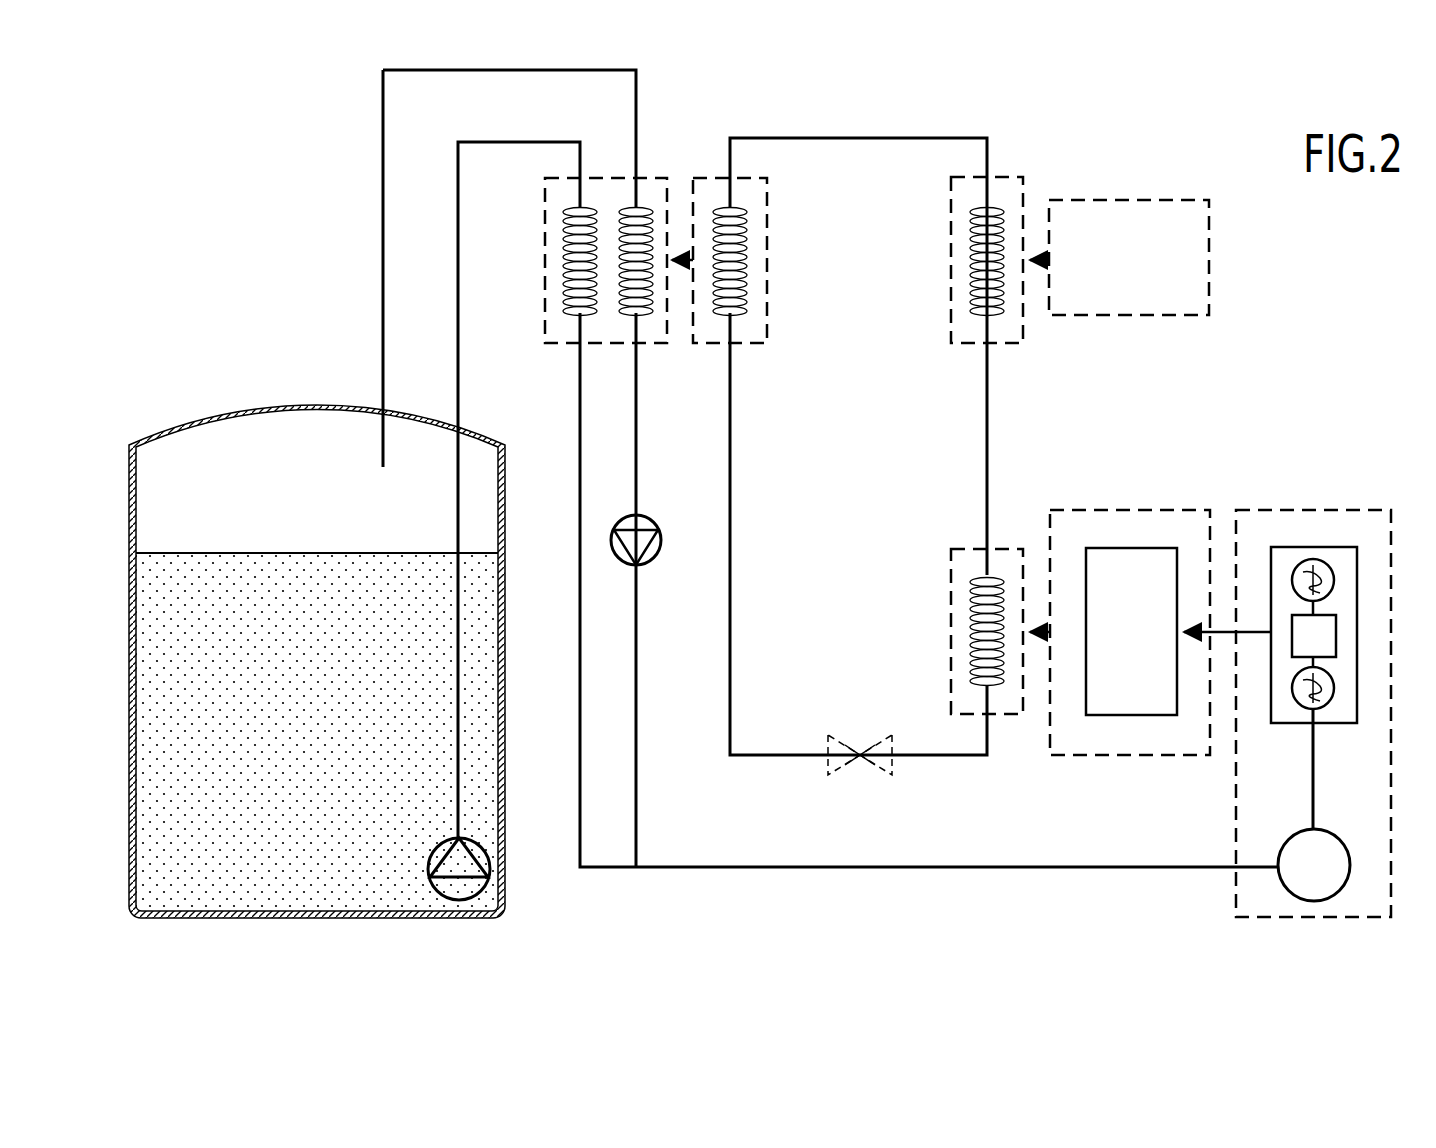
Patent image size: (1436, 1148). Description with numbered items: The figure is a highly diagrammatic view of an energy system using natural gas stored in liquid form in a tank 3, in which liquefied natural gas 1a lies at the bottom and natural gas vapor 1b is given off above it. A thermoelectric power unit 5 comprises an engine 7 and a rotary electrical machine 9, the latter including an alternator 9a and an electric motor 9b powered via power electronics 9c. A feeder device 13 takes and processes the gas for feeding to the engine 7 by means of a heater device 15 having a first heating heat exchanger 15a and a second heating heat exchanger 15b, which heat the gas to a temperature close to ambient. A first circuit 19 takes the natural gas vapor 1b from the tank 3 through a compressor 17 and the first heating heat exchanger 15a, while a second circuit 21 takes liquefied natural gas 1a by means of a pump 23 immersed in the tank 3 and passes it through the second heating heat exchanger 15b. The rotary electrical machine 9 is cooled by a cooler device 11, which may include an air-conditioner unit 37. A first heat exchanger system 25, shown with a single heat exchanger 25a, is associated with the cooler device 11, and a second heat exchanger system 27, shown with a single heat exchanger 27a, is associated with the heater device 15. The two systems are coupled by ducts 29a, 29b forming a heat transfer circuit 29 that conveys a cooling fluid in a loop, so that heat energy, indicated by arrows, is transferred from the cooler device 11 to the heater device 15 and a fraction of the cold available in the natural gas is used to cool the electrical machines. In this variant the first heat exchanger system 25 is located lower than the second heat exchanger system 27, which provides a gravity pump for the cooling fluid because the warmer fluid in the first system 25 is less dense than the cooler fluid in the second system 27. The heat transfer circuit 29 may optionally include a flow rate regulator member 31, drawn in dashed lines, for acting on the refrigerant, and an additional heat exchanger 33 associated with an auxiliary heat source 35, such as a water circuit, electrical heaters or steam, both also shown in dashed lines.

The liquefied natural gas 1a is at (292, 876).
The natural gas vapor 1b is at (225, 455).
The tank 3 is at (330, 402).
The thermoelectric power unit 5 is at (1293, 691).
The engine 7 is at (1300, 850).
The rotary electrical machine 9 is at (1342, 614).
The alternator 9a is at (1325, 700).
The electric motor 9b is at (1318, 566).
The power electronics 9c is at (1320, 630).
The cooler device 11 is at (1130, 596).
The feeder device 13 is at (653, 88).
The heater device 15 is at (594, 284).
The first heating heat exchanger 15a is at (640, 215).
The second heating heat exchanger 15b is at (566, 282).
The compressor 17 is at (655, 543).
The first circuit 19 is at (378, 187).
The second circuit 21 is at (546, 140).
The pump 23 is at (466, 858).
The first heat exchanger system 25 is at (940, 631).
The heat exchanger 25a is at (975, 600).
The second heat exchanger system 27 is at (762, 266).
The heat exchanger 27a is at (740, 252).
The heat transfer circuit 29 is at (847, 441).
The duct 29a is at (778, 758).
The duct 29b is at (868, 141).
The flow rate regulator member 31 is at (880, 770).
The additional heat exchanger 33 is at (948, 230).
The auxiliary heat source 35 is at (1128, 195).
The air-conditioner unit 37 is at (1160, 560).